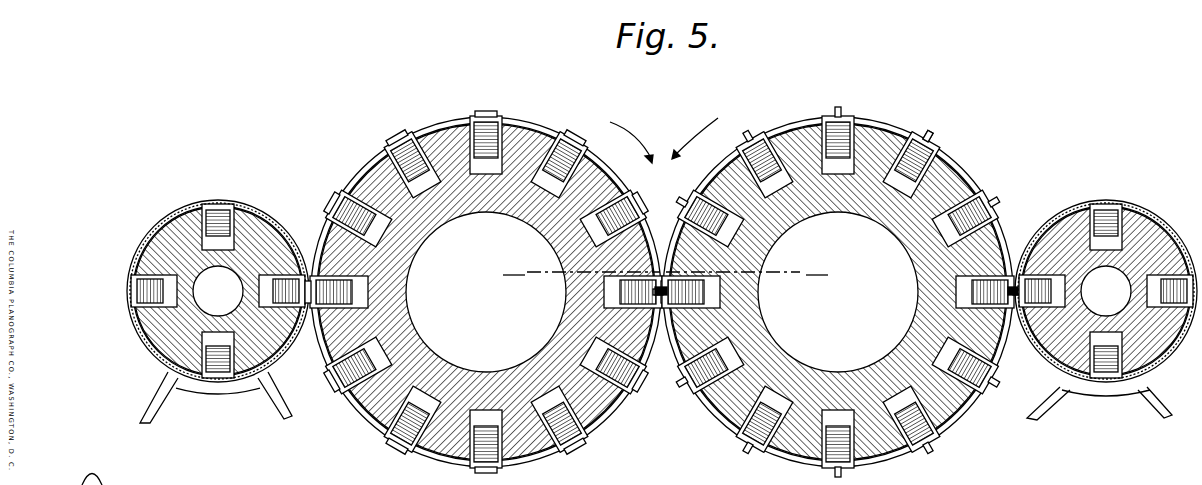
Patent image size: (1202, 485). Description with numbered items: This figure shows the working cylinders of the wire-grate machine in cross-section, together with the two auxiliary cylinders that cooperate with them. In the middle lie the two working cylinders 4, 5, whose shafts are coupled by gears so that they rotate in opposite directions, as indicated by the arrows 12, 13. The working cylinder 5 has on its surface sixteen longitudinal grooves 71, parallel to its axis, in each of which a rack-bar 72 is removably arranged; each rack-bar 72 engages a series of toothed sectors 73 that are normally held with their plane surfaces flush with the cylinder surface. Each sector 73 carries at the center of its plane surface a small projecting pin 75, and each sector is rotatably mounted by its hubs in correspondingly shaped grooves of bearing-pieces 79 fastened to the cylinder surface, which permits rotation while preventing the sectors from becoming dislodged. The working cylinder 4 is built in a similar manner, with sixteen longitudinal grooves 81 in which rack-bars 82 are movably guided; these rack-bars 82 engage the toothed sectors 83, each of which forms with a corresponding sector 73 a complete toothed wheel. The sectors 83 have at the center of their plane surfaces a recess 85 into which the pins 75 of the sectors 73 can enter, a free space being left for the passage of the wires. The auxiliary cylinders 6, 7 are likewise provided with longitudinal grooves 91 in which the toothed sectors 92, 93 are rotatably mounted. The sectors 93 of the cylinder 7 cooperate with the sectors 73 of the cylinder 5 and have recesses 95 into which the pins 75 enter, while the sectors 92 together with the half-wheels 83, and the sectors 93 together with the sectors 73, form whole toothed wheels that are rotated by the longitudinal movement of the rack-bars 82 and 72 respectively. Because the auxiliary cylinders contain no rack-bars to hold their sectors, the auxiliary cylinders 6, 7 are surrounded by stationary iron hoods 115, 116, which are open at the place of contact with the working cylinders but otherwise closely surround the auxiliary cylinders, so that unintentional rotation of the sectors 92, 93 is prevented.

The working cylinder 4 is at (486, 271).
The working cylinder 5 is at (838, 280).
The auxiliary cylinder 6 is at (197, 297).
The auxiliary cylinder 7 is at (1106, 293).
The arrow 12 is at (695, 136).
The arrow 13 is at (632, 139).
The longitudinal groove 71 is at (875, 150).
The rack-bar 72 is at (858, 160).
The toothed sector 73 is at (778, 130).
The projecting pin 75 is at (909, 125).
The bearing-piece 79 is at (940, 160).
The longitudinal groove 81 is at (392, 152).
The rack-bar 82 is at (517, 163).
The toothed sector 83 is at (415, 133).
The recess 85 is at (483, 120).
The longitudinal groove 91 is at (203, 228).
The toothed sector 92 is at (222, 212).
The toothed sector 93 is at (1106, 206).
The recess 95 is at (1020, 300).
The stationary iron hood 115 is at (268, 220).
The stationary iron hood 116 is at (1088, 202).